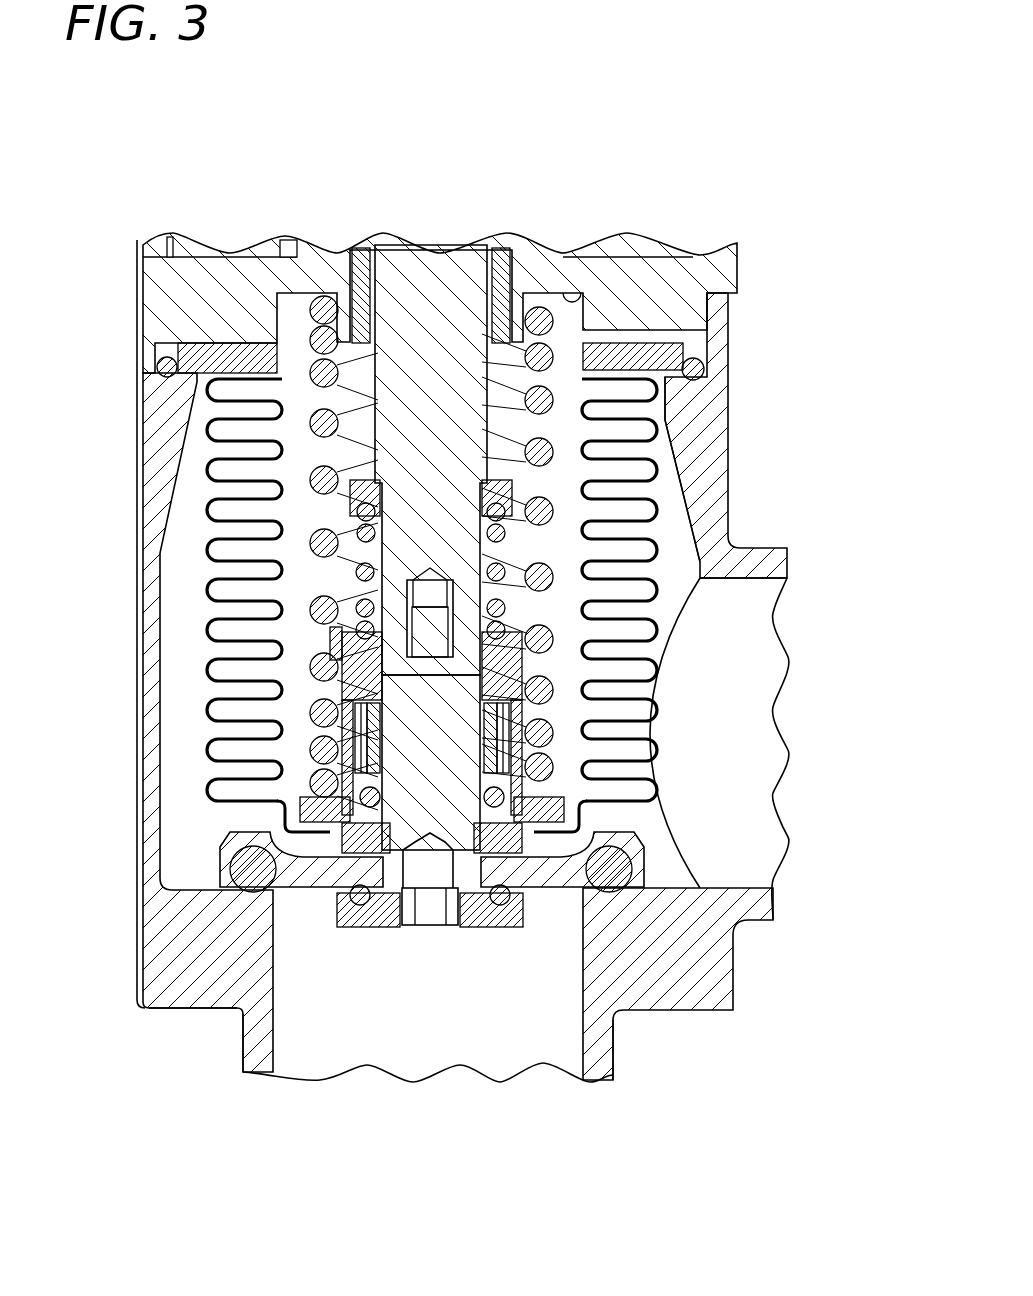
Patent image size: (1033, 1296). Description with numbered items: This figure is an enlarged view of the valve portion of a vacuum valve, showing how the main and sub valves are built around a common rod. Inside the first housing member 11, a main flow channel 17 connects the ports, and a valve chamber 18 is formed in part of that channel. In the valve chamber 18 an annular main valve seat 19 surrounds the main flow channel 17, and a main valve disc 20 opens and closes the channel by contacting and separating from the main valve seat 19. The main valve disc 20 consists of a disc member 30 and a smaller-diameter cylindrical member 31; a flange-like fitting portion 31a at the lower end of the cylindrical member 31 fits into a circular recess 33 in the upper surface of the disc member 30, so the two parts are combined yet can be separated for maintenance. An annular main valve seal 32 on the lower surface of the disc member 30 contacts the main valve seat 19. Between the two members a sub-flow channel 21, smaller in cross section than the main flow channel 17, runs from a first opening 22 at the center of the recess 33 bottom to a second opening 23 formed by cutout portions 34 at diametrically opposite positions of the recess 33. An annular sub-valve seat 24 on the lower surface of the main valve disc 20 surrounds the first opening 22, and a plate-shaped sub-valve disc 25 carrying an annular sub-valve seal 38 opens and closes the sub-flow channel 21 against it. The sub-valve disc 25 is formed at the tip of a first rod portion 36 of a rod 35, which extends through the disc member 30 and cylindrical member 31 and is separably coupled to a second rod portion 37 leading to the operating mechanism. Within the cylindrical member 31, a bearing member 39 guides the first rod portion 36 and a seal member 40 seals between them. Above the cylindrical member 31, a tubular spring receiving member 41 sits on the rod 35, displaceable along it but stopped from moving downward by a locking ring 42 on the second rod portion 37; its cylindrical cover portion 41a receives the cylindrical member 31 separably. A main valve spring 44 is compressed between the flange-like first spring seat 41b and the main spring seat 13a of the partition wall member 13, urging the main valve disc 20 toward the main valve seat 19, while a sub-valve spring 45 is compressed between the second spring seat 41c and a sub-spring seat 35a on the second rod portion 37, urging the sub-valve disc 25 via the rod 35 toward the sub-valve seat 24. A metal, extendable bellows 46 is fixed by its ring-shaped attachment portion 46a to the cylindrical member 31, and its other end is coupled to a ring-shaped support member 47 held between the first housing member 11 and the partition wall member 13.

The first housing member 11 is at (713, 333).
The partition wall member 13 is at (195, 275).
The main spring seat 13a is at (588, 297).
The main flow channel 17 is at (740, 782).
The valve chamber 18 is at (183, 690).
The main valve seat 19 is at (615, 885).
The main valve disc 20 is at (198, 855).
The sub-flow channel 21 is at (449, 893).
The first opening 22 is at (392, 915).
The second opening 23 is at (640, 855).
The sub-valve seat 24 is at (531, 893).
The sub-valve disc 25 is at (338, 885).
The disc member 30 is at (225, 870).
The cylindrical member 31 is at (345, 768).
The fitting portion 31a is at (228, 900).
The main valve seal 32 is at (700, 900).
The recess 33 is at (330, 882).
The cutout portions 34 is at (262, 900).
The rod 35 is at (450, 272).
The sub-spring seat 35a is at (352, 490).
The first rod portion 36 is at (413, 747).
The second rod portion 37 is at (408, 275).
The sub-valve seal 38 is at (497, 900).
The bearing member 39 is at (640, 693).
The seal member 40 is at (340, 817).
The spring receiving member 41 is at (507, 637).
The cover portion 41a is at (640, 747).
The first spring seat 41b is at (640, 810).
The second spring seat 41c is at (360, 604).
The locking ring 42 is at (640, 647).
The main valve spring 44 is at (640, 452).
The sub-valve spring 45 is at (363, 522).
The bellows 46 is at (205, 628).
The attachment portion 46a is at (640, 847).
The support member 47 is at (197, 358).